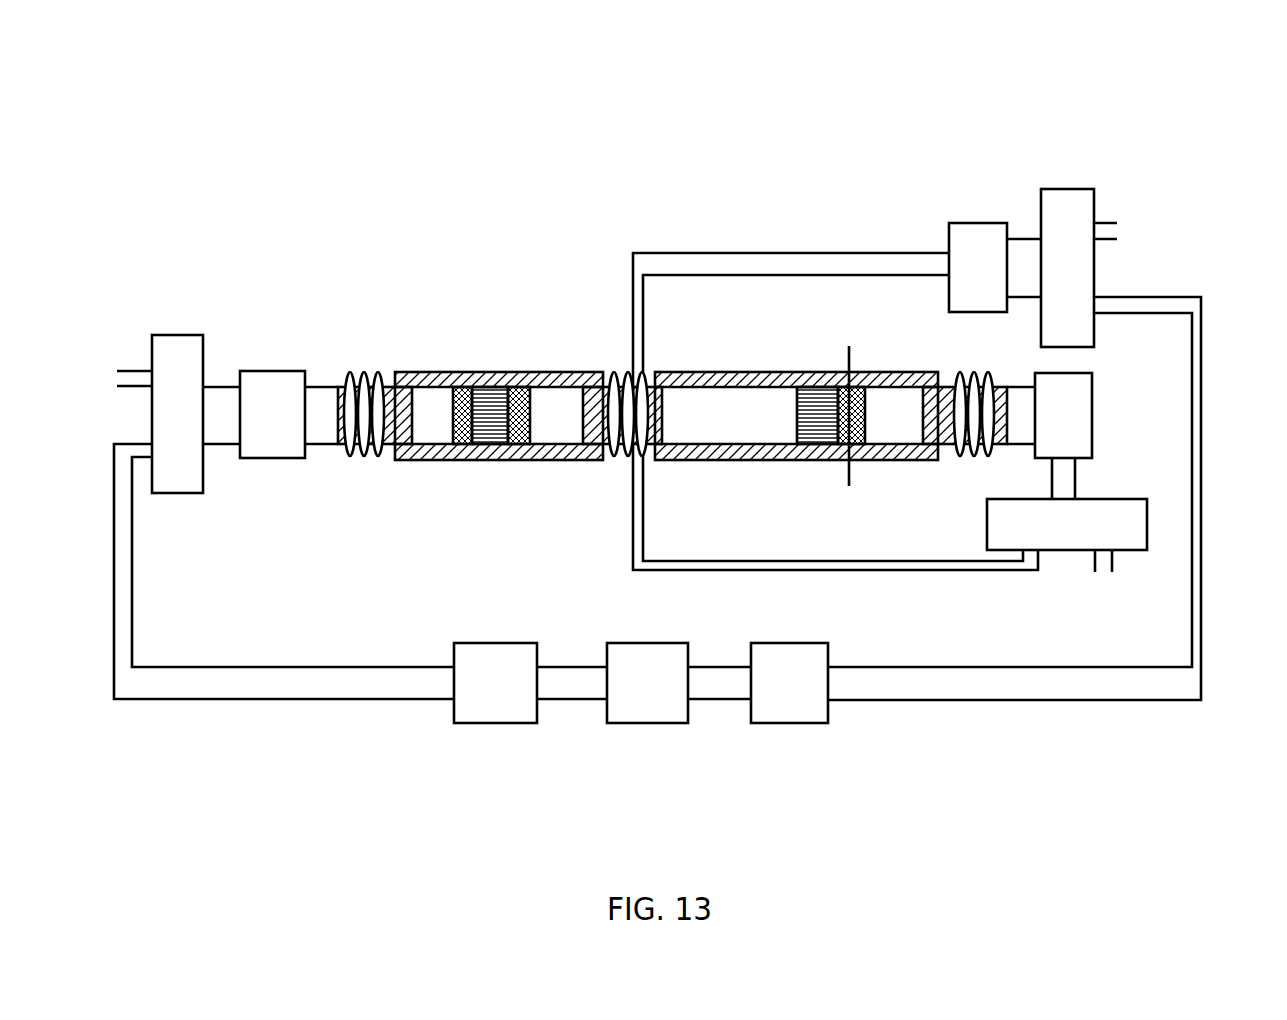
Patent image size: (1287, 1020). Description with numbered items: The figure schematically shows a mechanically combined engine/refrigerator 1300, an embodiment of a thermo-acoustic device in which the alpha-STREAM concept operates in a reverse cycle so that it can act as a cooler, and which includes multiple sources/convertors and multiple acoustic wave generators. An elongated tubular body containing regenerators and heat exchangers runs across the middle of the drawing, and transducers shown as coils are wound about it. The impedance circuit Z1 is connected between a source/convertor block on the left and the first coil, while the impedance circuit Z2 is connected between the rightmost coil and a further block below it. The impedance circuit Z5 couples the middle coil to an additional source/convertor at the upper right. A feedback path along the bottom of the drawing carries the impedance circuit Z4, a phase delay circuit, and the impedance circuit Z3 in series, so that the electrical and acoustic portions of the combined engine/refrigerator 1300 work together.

The mechanically combined engine/refrigerator 1300 is at (262, 70).
The impedance circuit Z1 is at (272, 414).
The impedance circuit Z2 is at (1063, 415).
The impedance circuit Z3 is at (789, 683).
The impedance circuit Z4 is at (495, 683).
The impedance circuit Z5 is at (978, 267).